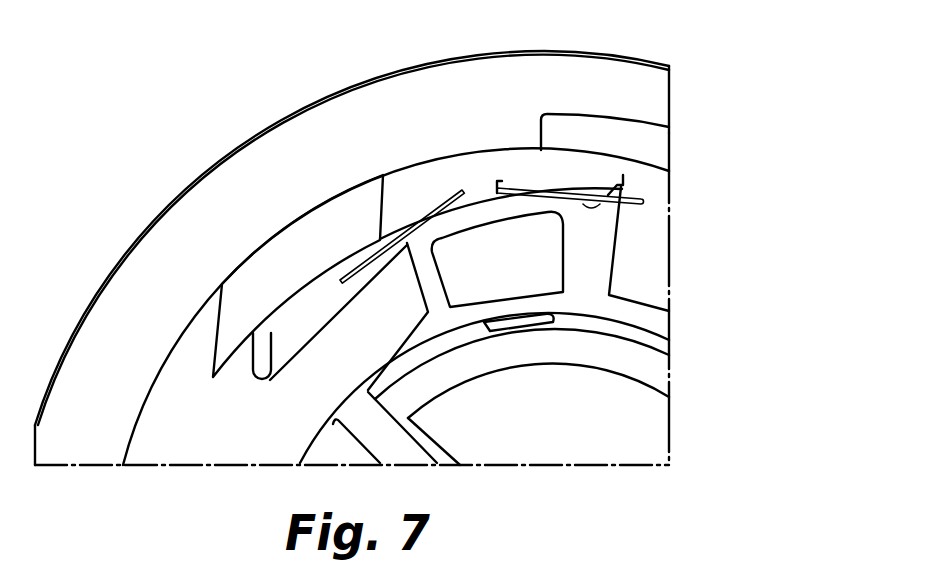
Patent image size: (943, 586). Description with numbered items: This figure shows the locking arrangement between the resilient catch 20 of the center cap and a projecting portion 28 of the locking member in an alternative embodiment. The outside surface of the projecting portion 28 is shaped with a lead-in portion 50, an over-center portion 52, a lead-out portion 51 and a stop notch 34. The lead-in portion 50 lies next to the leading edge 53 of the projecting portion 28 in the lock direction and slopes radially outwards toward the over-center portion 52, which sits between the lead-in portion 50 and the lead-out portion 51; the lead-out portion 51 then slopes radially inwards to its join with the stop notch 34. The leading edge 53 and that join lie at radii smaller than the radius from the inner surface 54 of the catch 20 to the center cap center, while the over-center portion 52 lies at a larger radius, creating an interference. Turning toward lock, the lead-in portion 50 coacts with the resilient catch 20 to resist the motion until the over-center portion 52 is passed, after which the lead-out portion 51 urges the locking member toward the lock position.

The resilient catch 20 is at (302, 213).
The projecting portion 28 is at (590, 263).
The stop notch 34 is at (623, 175).
The lead-in portion 50 is at (427, 213).
The lead-out portion 51 is at (547, 193).
The over-center portion 52 is at (497, 186).
The leading edge 53 is at (407, 245).
The inner surface 54 is at (263, 380).